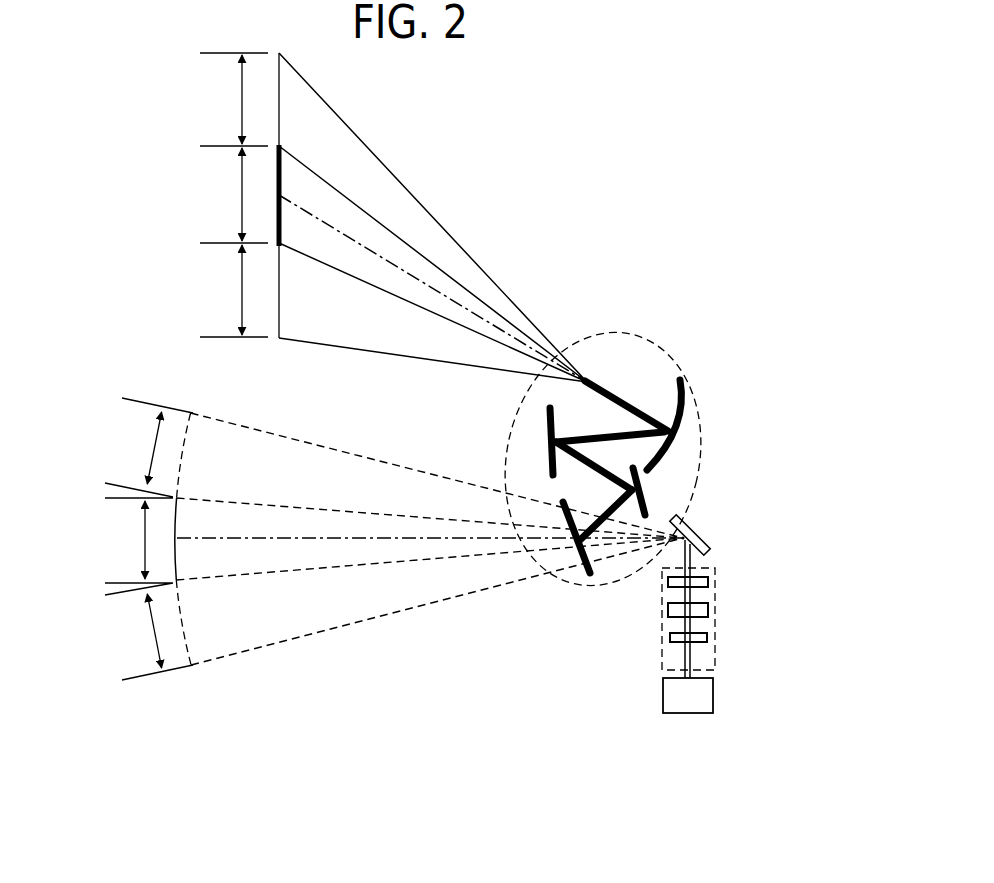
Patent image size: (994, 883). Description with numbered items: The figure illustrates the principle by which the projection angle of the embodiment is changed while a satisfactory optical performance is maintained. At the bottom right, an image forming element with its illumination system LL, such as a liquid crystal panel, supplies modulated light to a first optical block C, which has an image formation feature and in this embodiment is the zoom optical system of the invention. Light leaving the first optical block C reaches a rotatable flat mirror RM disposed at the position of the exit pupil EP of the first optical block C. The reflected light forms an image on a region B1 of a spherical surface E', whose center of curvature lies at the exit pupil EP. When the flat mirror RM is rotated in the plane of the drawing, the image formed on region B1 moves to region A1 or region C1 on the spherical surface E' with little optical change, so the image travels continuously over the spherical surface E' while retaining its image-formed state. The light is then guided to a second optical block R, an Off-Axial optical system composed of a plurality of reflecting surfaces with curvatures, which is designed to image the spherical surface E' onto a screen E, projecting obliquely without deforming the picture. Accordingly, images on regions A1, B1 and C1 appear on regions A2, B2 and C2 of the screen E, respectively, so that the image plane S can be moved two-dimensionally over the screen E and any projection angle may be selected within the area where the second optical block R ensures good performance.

The image plane S is at (281, 195).
The screen E is at (211, 195).
The region A2 of the screen A2 is at (219, 99).
The region B2 of the screen B2 is at (219, 194).
The region C2 of the screen C2 is at (219, 290).
The second optical block R is at (685, 360).
The exit pupil EP is at (688, 532).
The flat mirror RM is at (707, 554).
The first optical block C is at (715, 588).
The image forming element and illumination system LL is at (702, 713).
The spherical surface E' is at (117, 537).
The region A1 of the spherical surface A1 is at (139, 455).
The region B1 of the spherical surface B1 is at (123, 540).
The region C1 of the spherical surface C1 is at (139, 625).